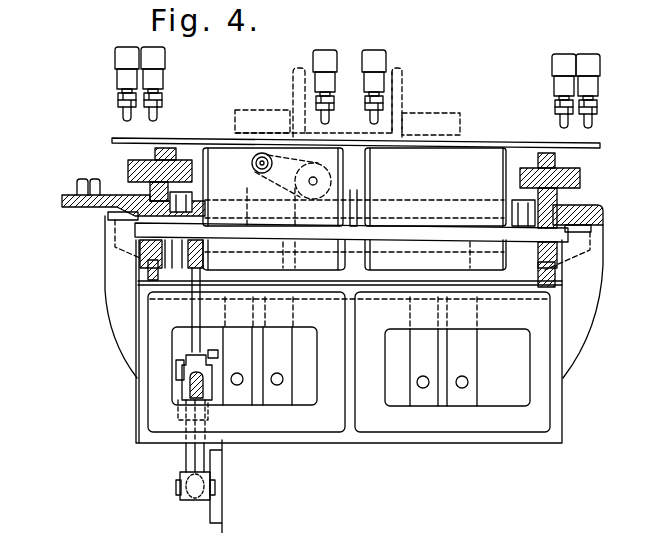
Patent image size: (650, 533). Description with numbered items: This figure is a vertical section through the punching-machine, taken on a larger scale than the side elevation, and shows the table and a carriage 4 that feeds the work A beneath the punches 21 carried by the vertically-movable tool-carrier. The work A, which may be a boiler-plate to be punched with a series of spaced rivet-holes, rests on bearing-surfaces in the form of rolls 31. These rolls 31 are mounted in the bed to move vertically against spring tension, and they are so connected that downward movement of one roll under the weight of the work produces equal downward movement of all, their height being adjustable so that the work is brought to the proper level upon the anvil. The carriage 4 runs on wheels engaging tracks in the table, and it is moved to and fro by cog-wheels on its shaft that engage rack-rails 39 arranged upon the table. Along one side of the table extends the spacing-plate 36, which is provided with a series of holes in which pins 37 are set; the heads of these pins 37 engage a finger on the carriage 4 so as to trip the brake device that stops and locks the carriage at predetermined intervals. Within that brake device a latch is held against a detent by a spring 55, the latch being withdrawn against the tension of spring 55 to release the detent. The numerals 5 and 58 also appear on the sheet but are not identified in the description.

The carriage 4 is at (365, 102).
The shaft hub 5 is at (582, 175).
The punches 21 is at (383, 119).
The rolls 31 is at (354, 187).
The spacing-plate 36 is at (83, 205).
The pins 37 is at (77, 180).
The rack-rails 39 is at (170, 148).
The spring 55 is at (183, 162).
The hub block 58 is at (128, 161).
The work A is at (405, 89).